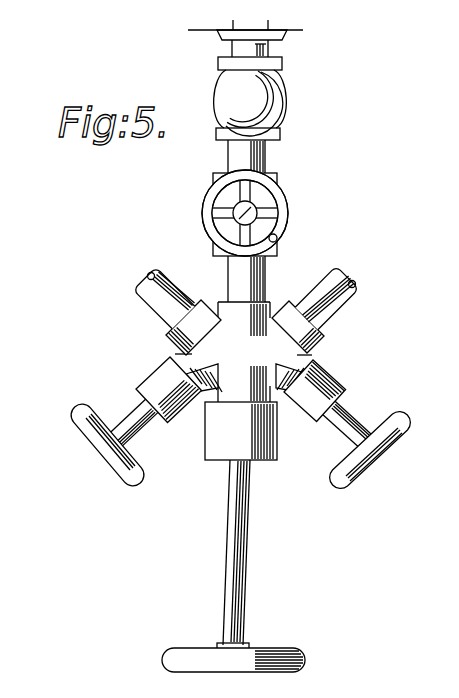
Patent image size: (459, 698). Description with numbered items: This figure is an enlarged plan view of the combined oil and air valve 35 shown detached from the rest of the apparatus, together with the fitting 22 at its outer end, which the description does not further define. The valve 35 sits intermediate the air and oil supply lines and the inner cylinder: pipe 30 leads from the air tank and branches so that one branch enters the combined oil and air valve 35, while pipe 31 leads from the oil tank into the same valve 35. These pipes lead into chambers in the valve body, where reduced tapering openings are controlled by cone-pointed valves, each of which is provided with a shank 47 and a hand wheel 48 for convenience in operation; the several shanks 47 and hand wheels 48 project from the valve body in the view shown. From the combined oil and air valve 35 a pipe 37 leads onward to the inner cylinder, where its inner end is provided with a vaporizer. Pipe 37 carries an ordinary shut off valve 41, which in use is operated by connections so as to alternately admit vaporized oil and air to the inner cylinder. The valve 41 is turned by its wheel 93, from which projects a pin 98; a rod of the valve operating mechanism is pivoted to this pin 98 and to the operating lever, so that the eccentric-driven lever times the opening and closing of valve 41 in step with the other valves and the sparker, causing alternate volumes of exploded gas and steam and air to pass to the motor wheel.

The valve 22 is at (208, 32).
The pipe 37 is at (267, 155).
The shut off valve 41 is at (228, 198).
The wheel 93 is at (287, 205).
The pin 98 is at (278, 235).
The pipe 30 is at (167, 292).
The pipe 31 is at (326, 285).
The combined oil and air valve 35 is at (241, 339).
The shank 47 is at (133, 427).
The hand wheel 48 is at (132, 480).